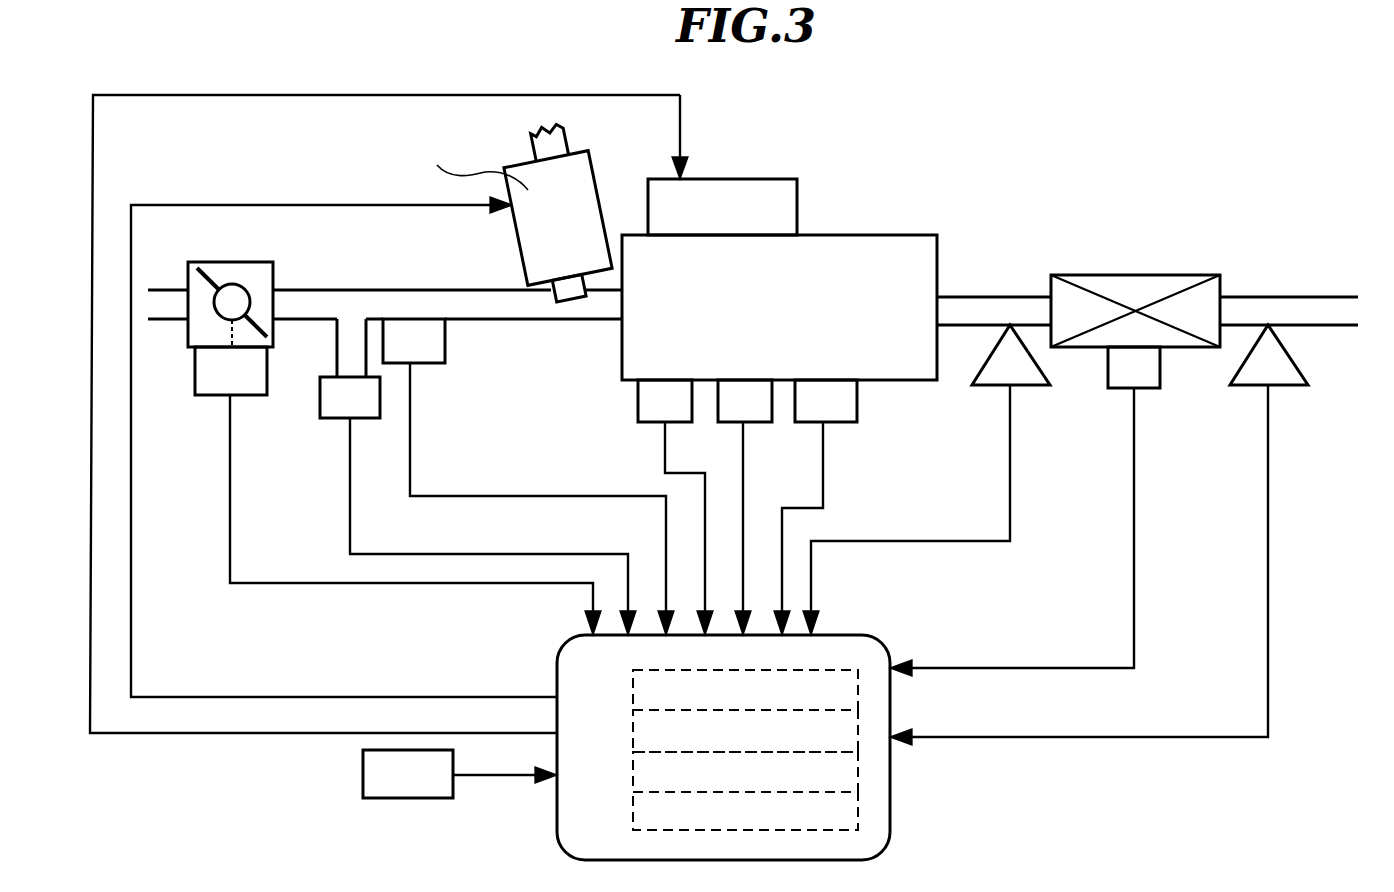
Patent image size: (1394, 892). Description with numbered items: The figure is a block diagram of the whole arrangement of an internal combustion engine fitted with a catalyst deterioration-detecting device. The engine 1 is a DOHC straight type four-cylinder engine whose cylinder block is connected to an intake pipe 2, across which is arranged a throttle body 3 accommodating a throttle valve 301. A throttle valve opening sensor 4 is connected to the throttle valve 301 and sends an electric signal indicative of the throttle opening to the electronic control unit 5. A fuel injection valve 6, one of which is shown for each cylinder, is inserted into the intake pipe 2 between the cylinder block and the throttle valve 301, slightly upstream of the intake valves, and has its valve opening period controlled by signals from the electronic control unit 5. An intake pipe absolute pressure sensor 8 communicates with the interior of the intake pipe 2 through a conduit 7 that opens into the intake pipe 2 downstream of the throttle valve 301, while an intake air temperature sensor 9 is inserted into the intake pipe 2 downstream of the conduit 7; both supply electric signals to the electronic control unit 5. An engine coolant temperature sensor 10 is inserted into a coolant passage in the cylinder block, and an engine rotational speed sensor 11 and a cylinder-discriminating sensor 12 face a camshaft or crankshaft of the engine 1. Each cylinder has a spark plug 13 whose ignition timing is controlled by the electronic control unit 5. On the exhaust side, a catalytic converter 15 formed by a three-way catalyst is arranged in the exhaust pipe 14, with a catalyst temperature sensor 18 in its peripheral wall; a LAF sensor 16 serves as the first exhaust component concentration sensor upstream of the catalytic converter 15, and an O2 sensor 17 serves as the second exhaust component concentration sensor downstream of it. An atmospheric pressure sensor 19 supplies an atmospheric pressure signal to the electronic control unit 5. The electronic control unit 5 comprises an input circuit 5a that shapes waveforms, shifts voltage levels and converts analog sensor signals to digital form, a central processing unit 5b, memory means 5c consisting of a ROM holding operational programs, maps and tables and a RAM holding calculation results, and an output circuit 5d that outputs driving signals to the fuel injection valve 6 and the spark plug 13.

The engine 1 is at (848, 236).
The intake pipe 2 is at (366, 290).
The throttle body 3 is at (274, 268).
The throttle valve 301 is at (204, 263).
The throttle valve opening sensor 4 is at (259, 397).
The electronic control unit 5 is at (714, 738).
The input circuit 5a is at (855, 682).
The central processing unit 5b is at (847, 728).
The memory means 5c is at (862, 765).
The output circuit 5d is at (853, 818).
The fuel injection valve 6 is at (598, 188).
The conduit 7 is at (337, 366).
The intake pipe absolute pressure sensor 8 is at (369, 420).
The intake air temperature sensor 9 is at (424, 364).
The engine coolant temperature sensor 10 is at (672, 424).
The engine rotational speed sensor 11 is at (752, 424).
The cylinder-discriminating sensor 12 is at (840, 424).
The spark plug 13 is at (797, 188).
The exhaust pipe 14 is at (950, 326).
The catalytic converter 15 is at (1121, 275).
The LAF sensor 16 is at (1033, 386).
The O2 sensor 17 is at (1296, 387).
The catalyst temperature sensor 18 is at (1141, 389).
The atmospheric pressure sensor 19 is at (363, 767).